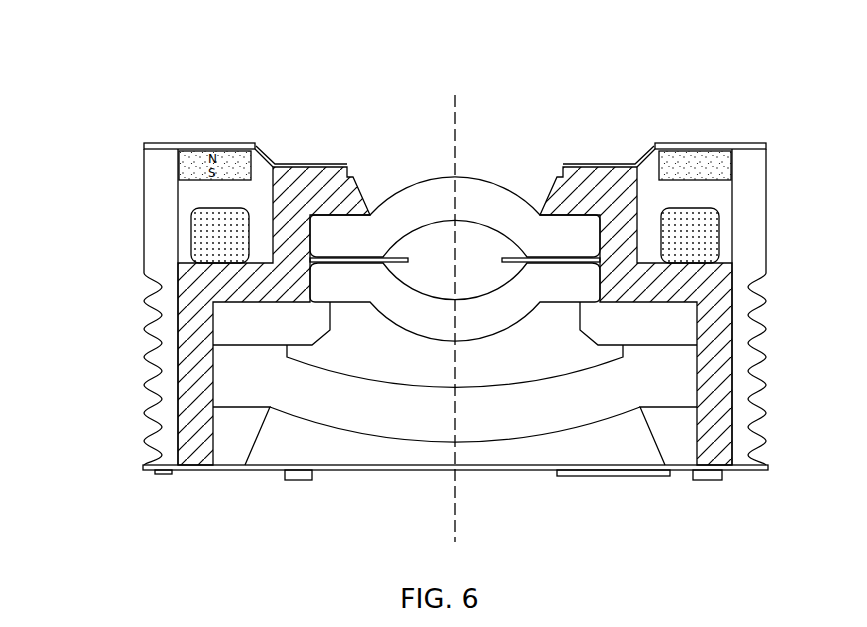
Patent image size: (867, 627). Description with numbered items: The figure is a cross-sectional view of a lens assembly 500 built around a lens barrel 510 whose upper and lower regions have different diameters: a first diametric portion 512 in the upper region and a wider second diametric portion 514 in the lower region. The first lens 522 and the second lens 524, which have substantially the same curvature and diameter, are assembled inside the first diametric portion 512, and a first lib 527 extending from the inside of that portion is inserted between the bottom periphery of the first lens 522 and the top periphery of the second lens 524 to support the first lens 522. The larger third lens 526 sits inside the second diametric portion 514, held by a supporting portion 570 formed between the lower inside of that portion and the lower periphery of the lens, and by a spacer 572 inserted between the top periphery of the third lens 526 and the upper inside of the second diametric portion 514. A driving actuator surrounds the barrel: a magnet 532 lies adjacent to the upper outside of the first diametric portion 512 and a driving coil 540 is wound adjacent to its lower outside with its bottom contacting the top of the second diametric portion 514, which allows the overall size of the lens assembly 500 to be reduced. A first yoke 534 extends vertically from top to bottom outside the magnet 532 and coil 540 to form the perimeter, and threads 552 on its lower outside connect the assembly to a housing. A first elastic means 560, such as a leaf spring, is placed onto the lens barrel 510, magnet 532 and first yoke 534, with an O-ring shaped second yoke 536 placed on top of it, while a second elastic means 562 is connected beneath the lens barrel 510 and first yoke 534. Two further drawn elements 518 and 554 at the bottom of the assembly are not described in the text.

The lens assembly 500 is at (118, 96).
The lens barrel 510 is at (550, 183).
The first diametric portion 512 is at (627, 210).
The second diametric portion 514 is at (720, 392).
The bottom protrusion 518 is at (297, 480).
The first lens 522 is at (468, 177).
The second lens 524 is at (408, 332).
The third lens 526 is at (510, 440).
The first lib 527 is at (350, 255).
The magnet 532 is at (717, 153).
The first yoke 534 is at (143, 213).
The second yoke 536 is at (199, 142).
The driving coil 540 is at (700, 228).
The threads 552 is at (143, 365).
The base plate 554 is at (613, 478).
The first elastic means 560 is at (640, 162).
The second elastic means 562 is at (143, 468).
The supporting portion 570 is at (227, 447).
The spacer 572 is at (680, 322).